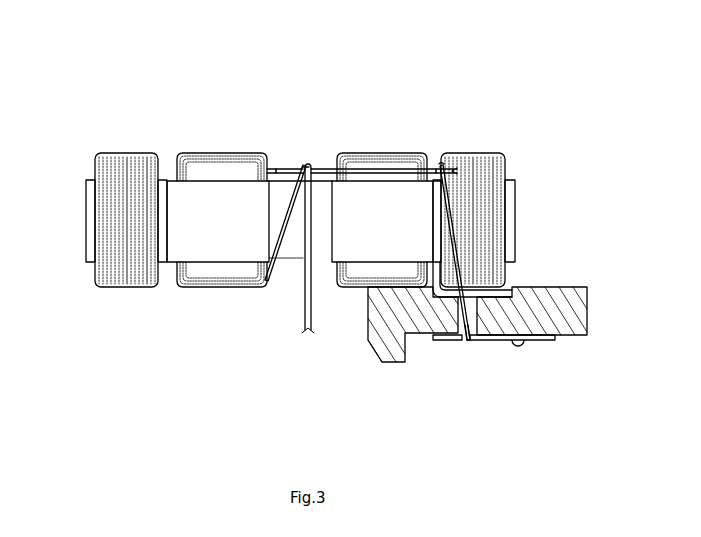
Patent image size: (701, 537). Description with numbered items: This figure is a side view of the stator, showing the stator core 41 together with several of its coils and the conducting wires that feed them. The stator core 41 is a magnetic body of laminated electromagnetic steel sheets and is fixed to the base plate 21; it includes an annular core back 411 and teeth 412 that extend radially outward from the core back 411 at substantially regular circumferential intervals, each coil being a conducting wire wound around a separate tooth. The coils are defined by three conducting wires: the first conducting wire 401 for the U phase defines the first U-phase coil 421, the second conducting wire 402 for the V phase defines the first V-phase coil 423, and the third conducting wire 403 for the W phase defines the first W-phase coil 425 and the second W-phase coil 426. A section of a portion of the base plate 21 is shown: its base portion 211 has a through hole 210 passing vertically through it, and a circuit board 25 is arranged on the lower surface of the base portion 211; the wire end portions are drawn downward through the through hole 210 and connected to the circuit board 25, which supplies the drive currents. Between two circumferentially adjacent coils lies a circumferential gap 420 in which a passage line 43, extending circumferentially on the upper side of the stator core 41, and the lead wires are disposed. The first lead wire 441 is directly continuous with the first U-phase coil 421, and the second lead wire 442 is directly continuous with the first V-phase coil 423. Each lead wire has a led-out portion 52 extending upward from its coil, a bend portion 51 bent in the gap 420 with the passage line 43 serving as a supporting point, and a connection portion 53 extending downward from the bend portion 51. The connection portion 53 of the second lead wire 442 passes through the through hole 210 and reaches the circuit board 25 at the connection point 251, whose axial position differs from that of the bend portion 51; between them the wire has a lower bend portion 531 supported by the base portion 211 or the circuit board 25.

The base plate 21 is at (411, 375).
The circuit board 25 is at (548, 343).
The stator core 41 is at (77, 248).
The passage line 43 is at (326, 165).
The bend portion 51 is at (305, 162).
The led-out portion 52 is at (278, 165).
The connection portion 53 is at (291, 215).
The through hole 210 is at (486, 290).
The base portion 211 is at (584, 288).
The connection point 251 is at (517, 348).
The first conducting wire 401 is at (240, 66).
The second conducting wire 402 is at (439, 66).
The third conducting wire 403 is at (73, 86).
The core back 411 is at (322, 266).
The teeth 412 is at (200, 266).
The circumferential gap 420 is at (291, 256).
The first U-phase coil 421 is at (183, 152).
The first V-phase coil 423 is at (378, 152).
The first W-phase coil 425 is at (497, 151).
The second W-phase coil 426 is at (100, 152).
The first lead wire 441 is at (303, 96).
The second lead wire 442 is at (496, 96).
The lower bend portion 531 is at (467, 343).